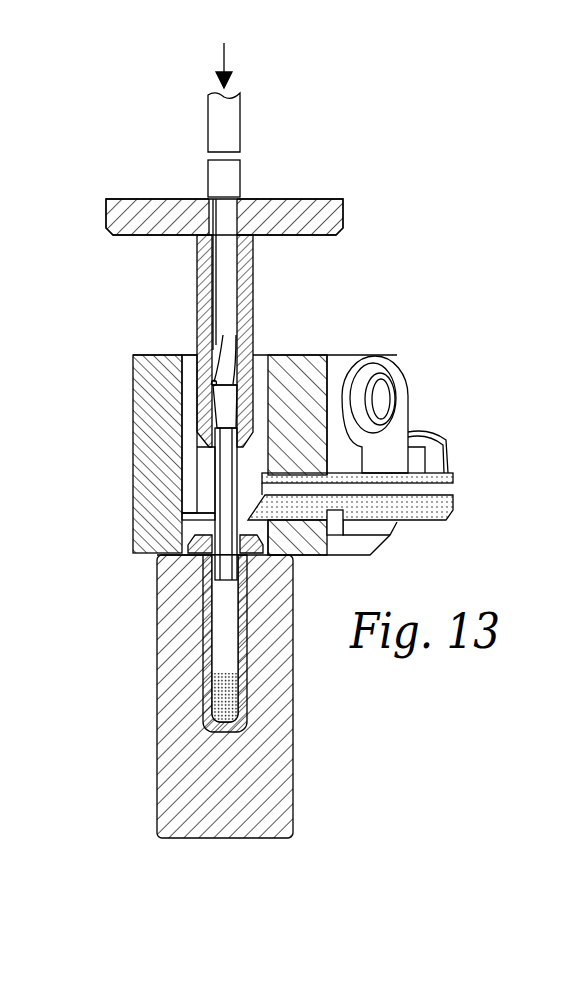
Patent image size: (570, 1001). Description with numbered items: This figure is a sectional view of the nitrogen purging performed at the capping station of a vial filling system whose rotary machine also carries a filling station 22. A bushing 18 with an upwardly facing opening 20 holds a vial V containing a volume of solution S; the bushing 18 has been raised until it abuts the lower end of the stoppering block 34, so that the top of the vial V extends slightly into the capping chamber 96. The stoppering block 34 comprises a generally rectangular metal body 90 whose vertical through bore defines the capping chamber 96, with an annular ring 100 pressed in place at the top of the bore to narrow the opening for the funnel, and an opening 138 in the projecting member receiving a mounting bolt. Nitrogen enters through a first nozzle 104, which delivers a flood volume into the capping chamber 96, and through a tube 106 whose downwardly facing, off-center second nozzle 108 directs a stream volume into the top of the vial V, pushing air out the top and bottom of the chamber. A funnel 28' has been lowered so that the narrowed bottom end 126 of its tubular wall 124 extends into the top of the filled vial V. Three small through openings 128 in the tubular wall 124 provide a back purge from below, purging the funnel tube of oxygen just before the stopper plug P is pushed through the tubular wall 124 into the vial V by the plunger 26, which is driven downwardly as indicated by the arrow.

The bushing 18 is at (275, 792).
The upwardly facing opening 20 is at (222, 641).
The filling station 22 is at (265, 178).
The plunger 26 is at (222, 118).
The funnel 28' is at (245, 184).
The stoppering block 34 is at (129, 408).
The metal body 90 is at (300, 355).
The capping chamber 96 is at (193, 472).
The annular ring 100 is at (190, 355).
The first nozzle 104 is at (238, 453).
The tube 106 is at (456, 512).
The second nozzle 108 is at (264, 556).
The tubular wall 124 is at (256, 270).
The bottom end 126 is at (215, 491).
The through openings 128 is at (224, 383).
The opening 138 is at (392, 374).
The stopper plug P is at (205, 173).
The solution S is at (233, 667).
The vial V is at (156, 560).